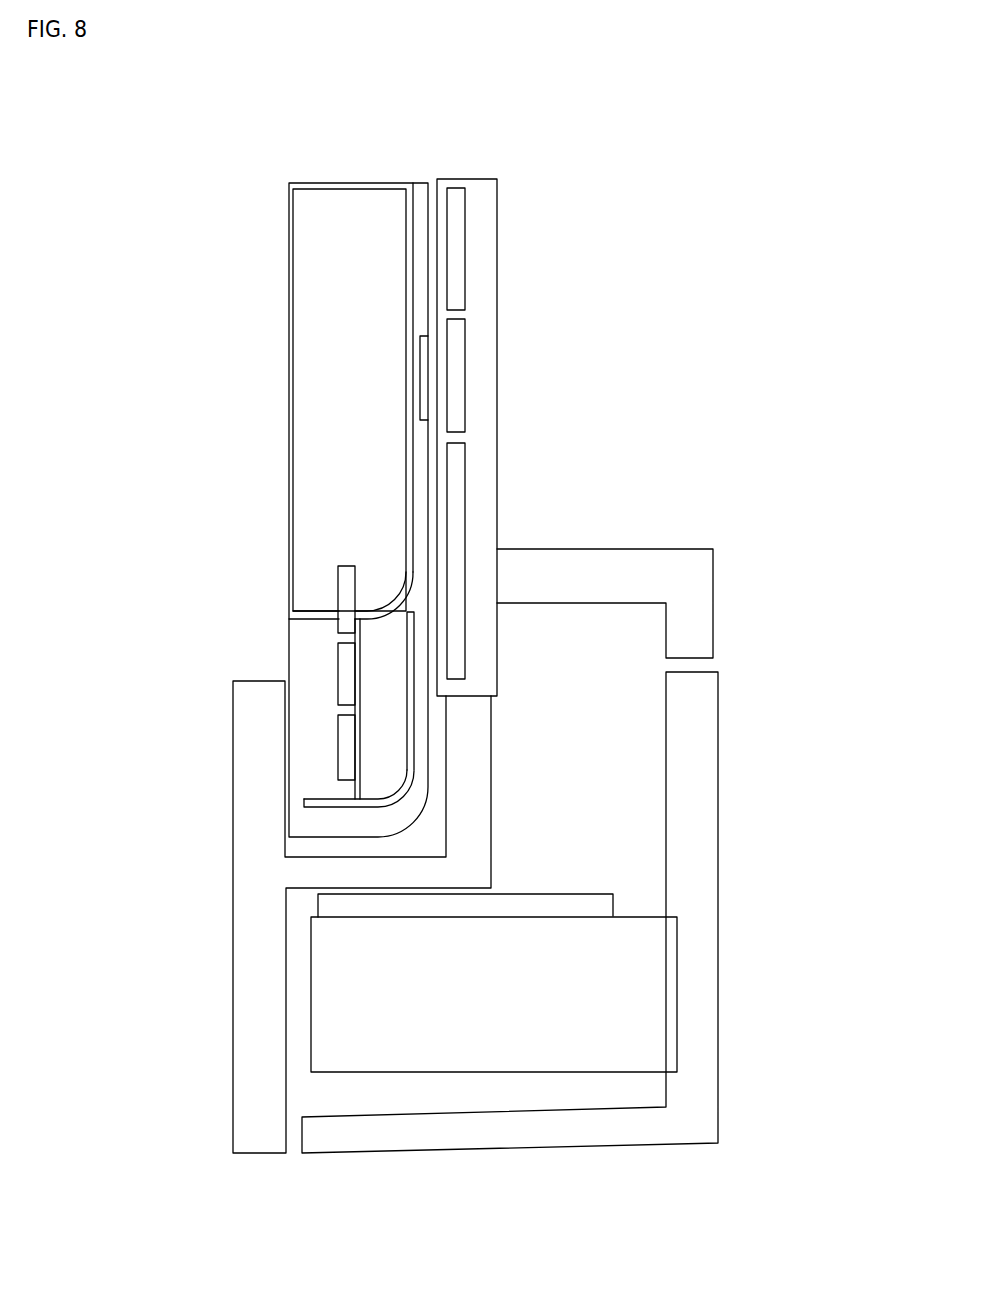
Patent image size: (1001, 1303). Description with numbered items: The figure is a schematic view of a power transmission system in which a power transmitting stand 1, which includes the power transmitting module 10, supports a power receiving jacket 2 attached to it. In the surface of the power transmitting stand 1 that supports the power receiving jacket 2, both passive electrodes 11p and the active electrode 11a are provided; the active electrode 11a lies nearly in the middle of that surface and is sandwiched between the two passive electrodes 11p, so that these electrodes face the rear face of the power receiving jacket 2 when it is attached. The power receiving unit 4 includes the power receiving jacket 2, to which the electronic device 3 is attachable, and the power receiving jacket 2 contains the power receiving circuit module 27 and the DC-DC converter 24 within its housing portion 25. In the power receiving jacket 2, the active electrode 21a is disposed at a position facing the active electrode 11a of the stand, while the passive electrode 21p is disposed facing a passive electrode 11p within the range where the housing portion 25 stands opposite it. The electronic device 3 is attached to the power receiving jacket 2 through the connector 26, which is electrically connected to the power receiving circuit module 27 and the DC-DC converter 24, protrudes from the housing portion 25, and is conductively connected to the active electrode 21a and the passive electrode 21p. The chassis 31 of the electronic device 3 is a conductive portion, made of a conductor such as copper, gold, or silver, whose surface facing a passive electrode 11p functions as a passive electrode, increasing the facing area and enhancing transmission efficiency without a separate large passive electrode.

The power transmitting stand 1 is at (575, 398).
The power receiving jacket 2 is at (168, 400).
The electronic device 3 is at (309, 222).
The power receiving unit 4 is at (236, 347).
The power transmitting module 10 is at (670, 988).
The active electrode 11a is at (455, 352).
The passive electrodes 11p is at (455, 250).
The active electrode 21a is at (423, 383).
The passive electrode 21p is at (410, 607).
The DC-DC converter 24 is at (345, 743).
The housing portion 25 is at (513, 612).
The connector 26 is at (345, 594).
The power receiving circuit module 27 is at (345, 668).
The chassis 31 is at (407, 285).